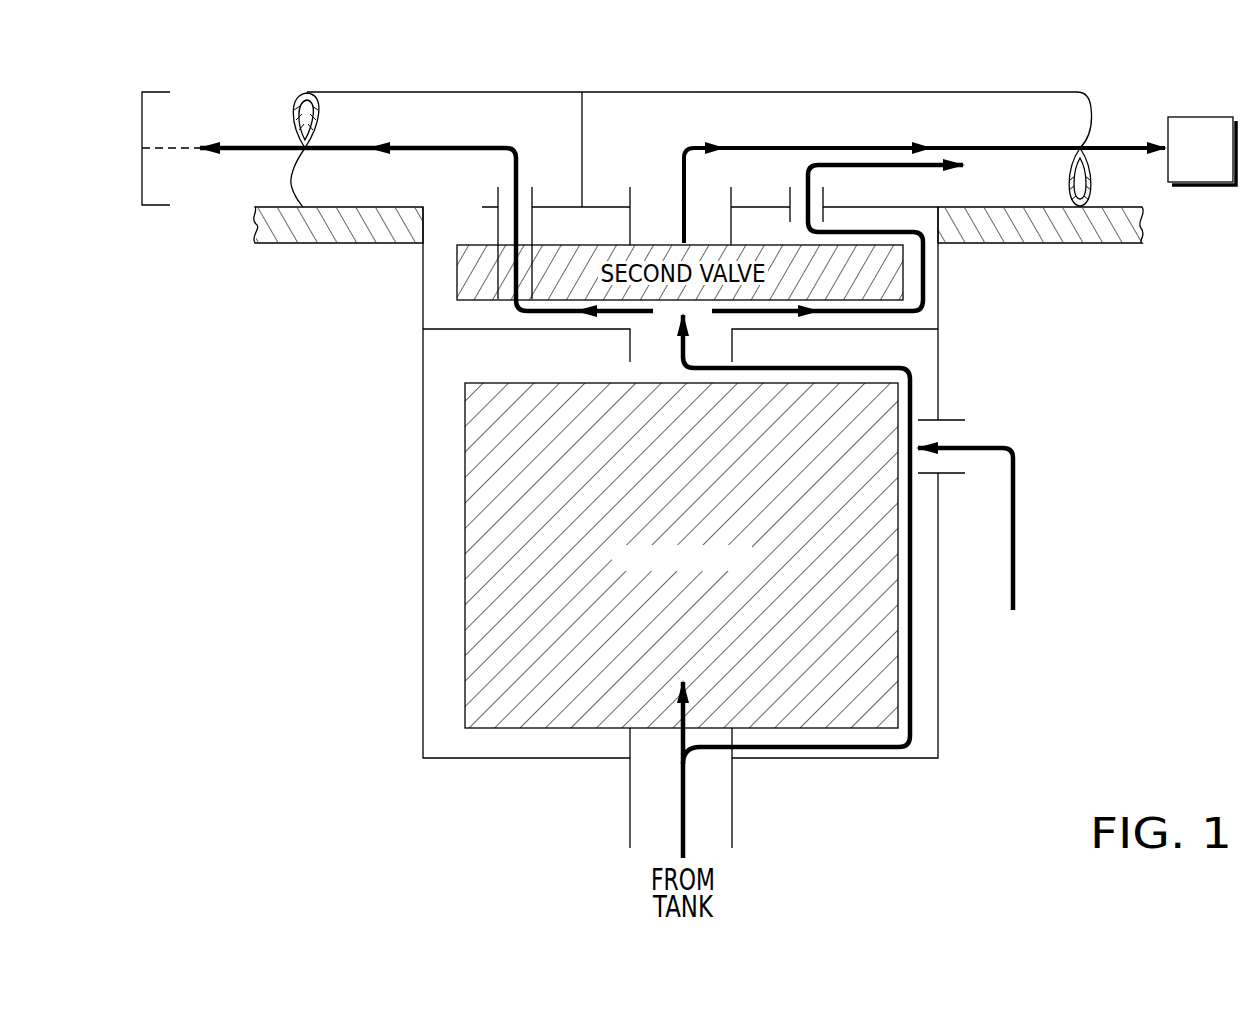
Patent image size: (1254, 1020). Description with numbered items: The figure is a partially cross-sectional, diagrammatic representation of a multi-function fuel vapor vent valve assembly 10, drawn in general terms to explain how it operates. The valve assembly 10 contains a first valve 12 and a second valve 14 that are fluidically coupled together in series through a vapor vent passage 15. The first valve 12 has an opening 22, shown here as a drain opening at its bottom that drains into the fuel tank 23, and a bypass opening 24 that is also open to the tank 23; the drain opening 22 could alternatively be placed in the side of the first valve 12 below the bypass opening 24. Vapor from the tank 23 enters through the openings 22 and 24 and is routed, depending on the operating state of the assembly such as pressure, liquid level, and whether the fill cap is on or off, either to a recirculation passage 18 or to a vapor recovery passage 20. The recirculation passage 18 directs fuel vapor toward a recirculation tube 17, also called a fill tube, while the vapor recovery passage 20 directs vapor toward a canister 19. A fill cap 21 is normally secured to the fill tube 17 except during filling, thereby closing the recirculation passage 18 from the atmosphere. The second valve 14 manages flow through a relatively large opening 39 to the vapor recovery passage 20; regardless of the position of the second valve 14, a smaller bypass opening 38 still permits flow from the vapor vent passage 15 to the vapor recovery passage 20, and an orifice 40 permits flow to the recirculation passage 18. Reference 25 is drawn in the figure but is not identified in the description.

The multi-function valve assembly 10 is at (402, 526).
The first valve 12 is at (466, 631).
The second valve 14 is at (540, 312).
The vapor vent passage 15 is at (630, 345).
The recirculation tube 17 is at (175, 148).
The recirculation passage 18 is at (448, 92).
The canister 19 is at (1186, 163).
The vapor recovery passage 20 is at (915, 92).
The fill cap 21 is at (156, 92).
The opening 22 is at (653, 787).
The fuel tank 23 is at (327, 243).
The bypass opening 24 is at (950, 421).
The cavity 25 is at (276, 406).
The bypass opening 38 is at (790, 190).
The opening 39 is at (660, 205).
The orifice 40 is at (531, 190).